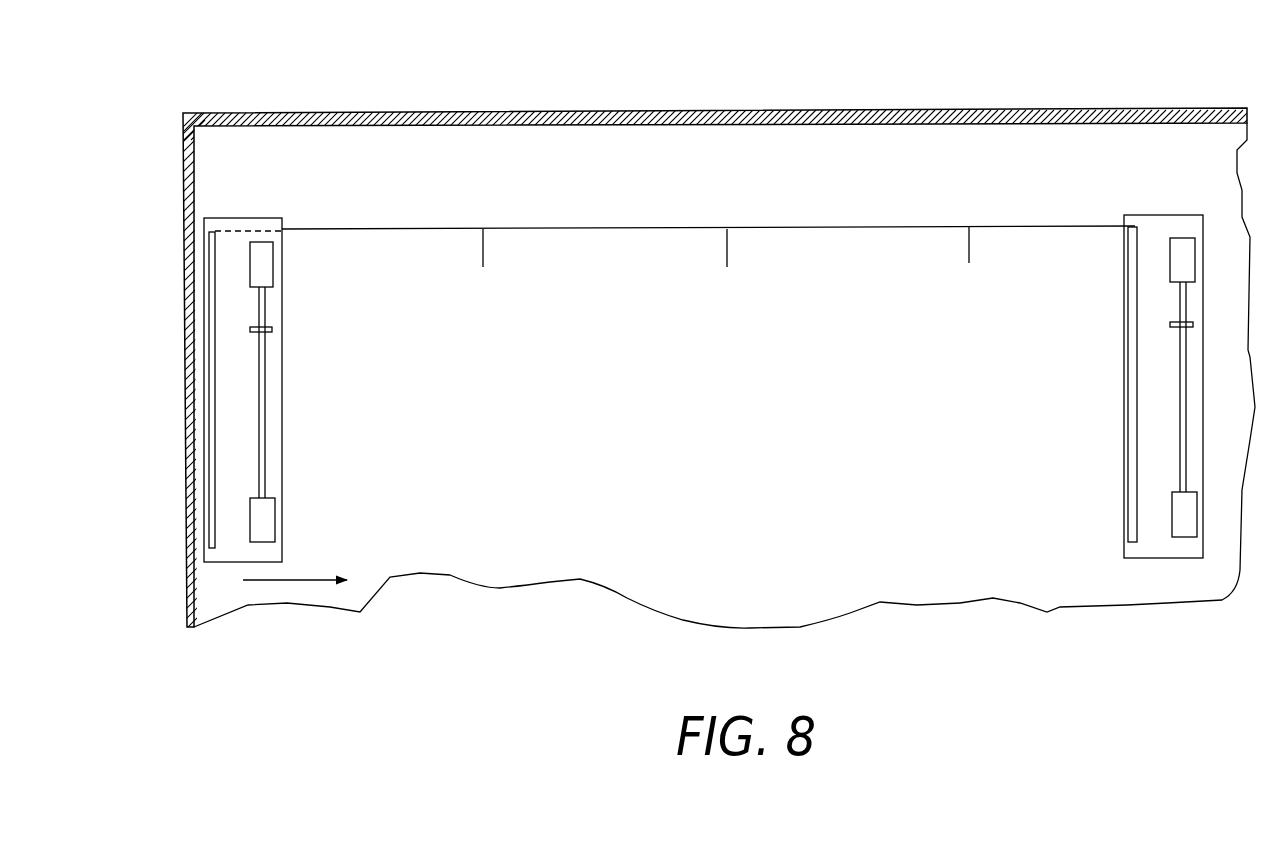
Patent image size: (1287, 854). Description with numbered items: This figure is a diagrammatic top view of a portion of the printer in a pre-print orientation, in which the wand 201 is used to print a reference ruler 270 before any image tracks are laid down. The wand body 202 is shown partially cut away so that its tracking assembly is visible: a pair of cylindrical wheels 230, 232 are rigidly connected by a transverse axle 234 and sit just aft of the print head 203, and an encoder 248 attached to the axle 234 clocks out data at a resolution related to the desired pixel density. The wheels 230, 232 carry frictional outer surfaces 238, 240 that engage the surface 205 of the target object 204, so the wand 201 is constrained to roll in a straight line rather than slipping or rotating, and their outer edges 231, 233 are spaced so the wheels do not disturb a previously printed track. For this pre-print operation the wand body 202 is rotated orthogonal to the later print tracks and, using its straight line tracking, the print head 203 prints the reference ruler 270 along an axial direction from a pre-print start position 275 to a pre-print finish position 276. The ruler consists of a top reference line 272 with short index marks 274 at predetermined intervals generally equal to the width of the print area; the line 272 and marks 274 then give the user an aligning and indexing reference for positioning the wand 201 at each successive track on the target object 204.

The wand 201 is at (230, 567).
The wand body 202 is at (283, 308).
The print head 203 is at (208, 252).
The target object 204 is at (628, 602).
The surface 205 is at (908, 541).
The wheel 230 is at (259, 545).
The outer edge 231 is at (268, 542).
The wheel 232 is at (268, 238).
The outer edge 233 is at (263, 242).
The transverse axle 234 is at (267, 408).
The frictional outer surface 238 is at (277, 517).
The frictional outer surface 240 is at (275, 265).
The encoder 248 is at (270, 330).
The reference ruler 270 is at (438, 228).
The top reference line 272 is at (823, 227).
The index marks 274 is at (484, 250).
The pre-print start position 275 is at (218, 215).
The pre-print finish position 276 is at (1195, 192).